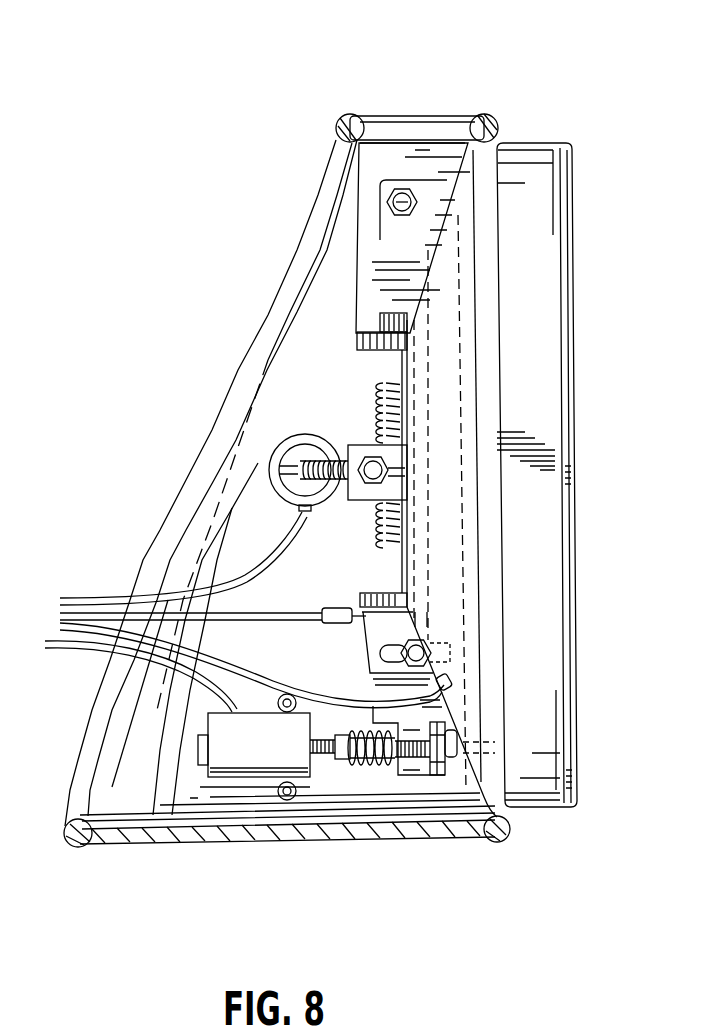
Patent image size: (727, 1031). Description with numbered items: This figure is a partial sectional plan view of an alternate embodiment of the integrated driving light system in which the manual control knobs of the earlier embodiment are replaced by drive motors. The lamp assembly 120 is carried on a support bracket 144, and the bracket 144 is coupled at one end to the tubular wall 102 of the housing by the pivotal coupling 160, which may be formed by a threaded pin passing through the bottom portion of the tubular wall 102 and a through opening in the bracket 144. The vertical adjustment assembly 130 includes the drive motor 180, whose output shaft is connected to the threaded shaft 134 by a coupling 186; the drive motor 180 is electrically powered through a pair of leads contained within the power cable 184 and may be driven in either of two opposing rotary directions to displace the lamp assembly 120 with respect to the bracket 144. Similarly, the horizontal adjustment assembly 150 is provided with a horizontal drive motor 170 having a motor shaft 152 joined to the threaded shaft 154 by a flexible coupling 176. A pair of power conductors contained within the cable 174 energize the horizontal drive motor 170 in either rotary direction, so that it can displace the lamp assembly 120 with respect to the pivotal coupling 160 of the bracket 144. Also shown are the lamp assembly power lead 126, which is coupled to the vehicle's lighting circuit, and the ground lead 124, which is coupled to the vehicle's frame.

The tubular wall 102 is at (402, 118).
The lamp assembly 120 is at (540, 128).
The pivotal coupling 160 is at (397, 200).
The support bracket 144 is at (383, 250).
The coupling 186 is at (300, 455).
The drive motor 180 is at (275, 455).
The threaded shaft 134 is at (330, 448).
The vertical adjustment assembly 130 is at (246, 481).
The power cable 184 is at (90, 598).
The ground lead 124 is at (287, 612).
The power lead 126 is at (271, 680).
The cable 174 is at (65, 648).
The horizontal drive motor 170 is at (284, 750).
The horizontal adjustment assembly 150 is at (251, 798).
The motor shaft 152 is at (310, 786).
The flexible coupling 176 is at (363, 766).
The threaded shaft 154 is at (422, 778).